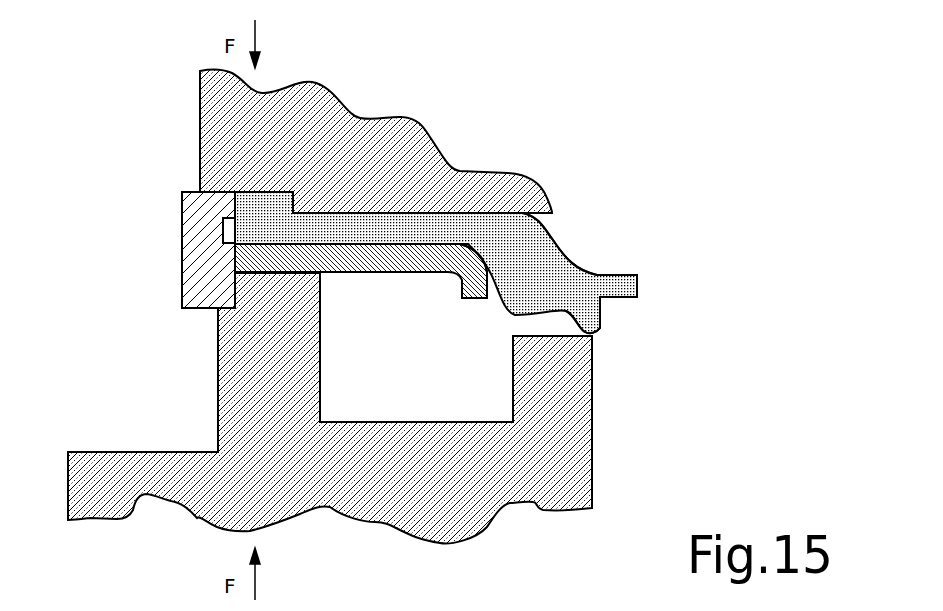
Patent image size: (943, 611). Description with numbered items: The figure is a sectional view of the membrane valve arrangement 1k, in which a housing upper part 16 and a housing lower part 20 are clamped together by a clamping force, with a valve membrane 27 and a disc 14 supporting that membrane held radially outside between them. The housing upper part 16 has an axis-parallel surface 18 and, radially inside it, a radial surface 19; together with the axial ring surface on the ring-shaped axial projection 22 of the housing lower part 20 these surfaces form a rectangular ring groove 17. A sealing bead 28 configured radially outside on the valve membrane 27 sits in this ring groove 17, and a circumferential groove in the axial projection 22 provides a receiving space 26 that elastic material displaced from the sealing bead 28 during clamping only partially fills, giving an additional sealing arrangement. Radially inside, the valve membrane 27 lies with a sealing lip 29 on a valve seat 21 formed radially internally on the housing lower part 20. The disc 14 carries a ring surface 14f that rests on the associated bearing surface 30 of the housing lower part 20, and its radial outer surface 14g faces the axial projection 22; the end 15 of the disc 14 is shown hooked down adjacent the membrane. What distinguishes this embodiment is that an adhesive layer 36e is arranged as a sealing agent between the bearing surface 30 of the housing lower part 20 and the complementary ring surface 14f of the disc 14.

The membrane valve arrangement 1k is at (635, 107).
The disc 14 is at (416, 274).
The ring surface 14f is at (268, 276).
The radial outer surface 14g is at (235, 260).
The hook end of retaining element 15 is at (490, 288).
The housing upper part 16 is at (515, 172).
The ring groove 17 is at (270, 203).
The axis-parallel surface 18 is at (285, 200).
The radial surface 19 is at (225, 200).
The housing lower part 20 is at (593, 438).
The valve seat 21 is at (575, 338).
The ring-shaped axial projection 22 is at (183, 274).
The receiving space 26 is at (228, 235).
The valve membrane 27 is at (567, 250).
The sealing bead 28 is at (252, 192).
The sealing lip 29 is at (600, 322).
The bearing surface 30 is at (318, 266).
The adhesive layer 36e is at (220, 340).